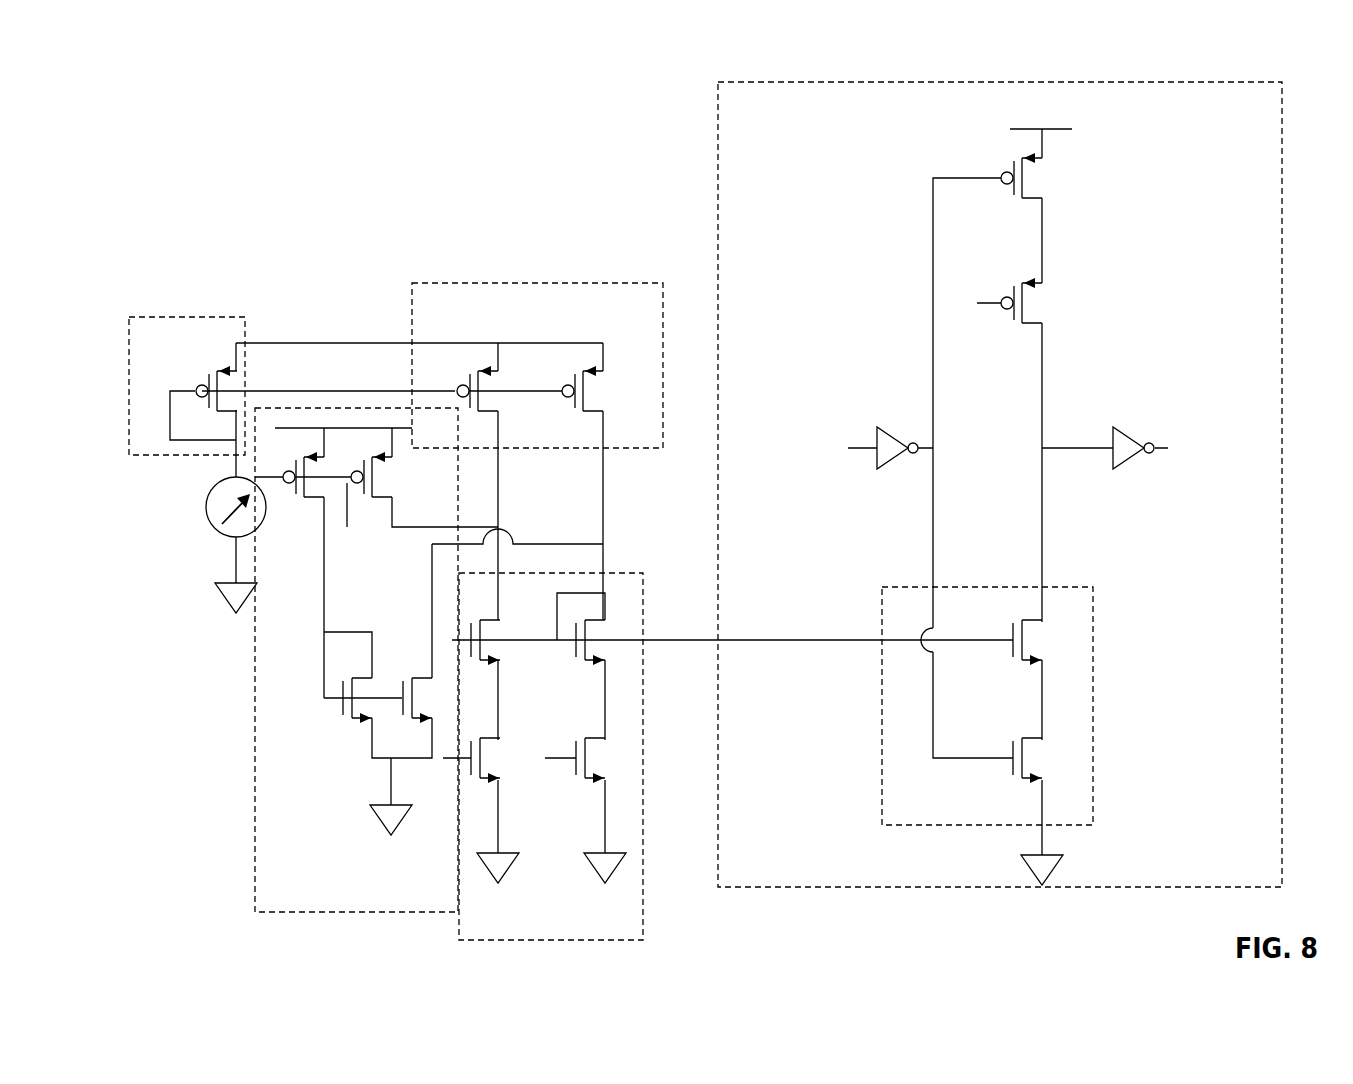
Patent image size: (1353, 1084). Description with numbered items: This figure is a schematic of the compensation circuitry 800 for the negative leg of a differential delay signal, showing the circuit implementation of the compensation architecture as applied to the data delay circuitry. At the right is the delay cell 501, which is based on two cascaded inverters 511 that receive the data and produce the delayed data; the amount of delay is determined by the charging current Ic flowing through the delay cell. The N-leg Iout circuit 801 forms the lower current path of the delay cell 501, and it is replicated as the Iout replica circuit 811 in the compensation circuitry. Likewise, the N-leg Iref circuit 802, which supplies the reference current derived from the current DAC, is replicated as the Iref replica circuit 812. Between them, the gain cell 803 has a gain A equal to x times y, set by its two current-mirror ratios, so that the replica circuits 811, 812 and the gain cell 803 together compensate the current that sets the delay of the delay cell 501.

The compensation circuitry for the negative leg 800 is at (176, 100).
The N-leg Iref circuit 802 is at (197, 316).
The Iref replica circuit 812 is at (480, 282).
The gain cell 803 is at (320, 912).
The Iout replica circuit 811 is at (613, 574).
The delay cell 501 is at (790, 80).
The inverter 511 is at (893, 430).
The N-leg Iout circuit 801 is at (912, 585).